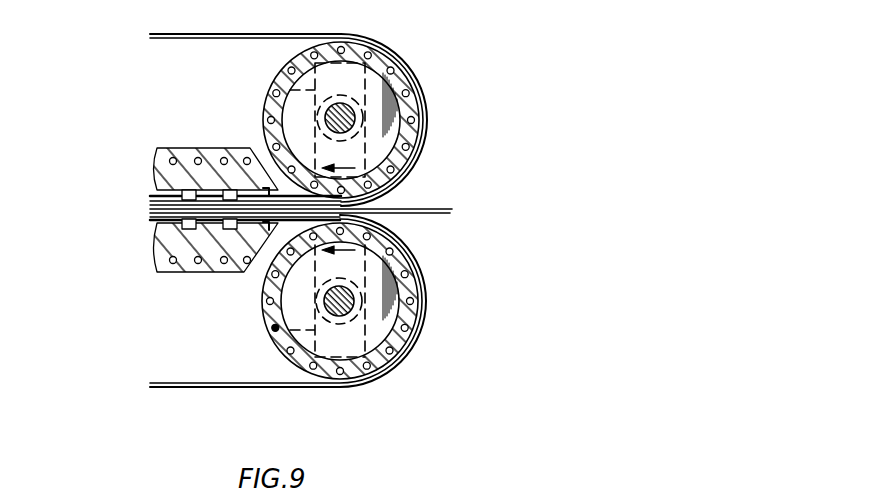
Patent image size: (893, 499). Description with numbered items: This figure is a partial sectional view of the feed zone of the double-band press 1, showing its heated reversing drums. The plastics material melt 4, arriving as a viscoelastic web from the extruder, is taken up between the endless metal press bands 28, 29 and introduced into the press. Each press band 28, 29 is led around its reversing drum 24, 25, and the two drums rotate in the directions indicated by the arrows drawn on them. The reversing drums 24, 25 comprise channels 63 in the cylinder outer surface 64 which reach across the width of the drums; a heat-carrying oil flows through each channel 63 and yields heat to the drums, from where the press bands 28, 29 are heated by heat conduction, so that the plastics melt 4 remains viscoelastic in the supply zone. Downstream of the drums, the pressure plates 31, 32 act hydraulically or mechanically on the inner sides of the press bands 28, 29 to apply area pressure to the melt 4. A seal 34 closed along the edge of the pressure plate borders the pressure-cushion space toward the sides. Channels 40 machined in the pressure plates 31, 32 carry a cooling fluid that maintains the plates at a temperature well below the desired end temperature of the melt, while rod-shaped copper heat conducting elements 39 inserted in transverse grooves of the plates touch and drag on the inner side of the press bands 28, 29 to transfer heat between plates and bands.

The double-band press 1 is at (167, 87).
The plastics material melt 4 is at (428, 209).
The reversing drum 24 is at (385, 67).
The reversing drum 25 is at (378, 327).
The press band 28 is at (150, 33).
The press band 29 is at (190, 388).
The pressure plate 31 is at (160, 173).
The pressure plate 32 is at (160, 249).
The seal 34 is at (263, 186).
The heat conducting element 39 is at (155, 197).
The channel 40 is at (197, 158).
The channel 63 is at (408, 147).
The cylinder outer surface 64 is at (398, 78).